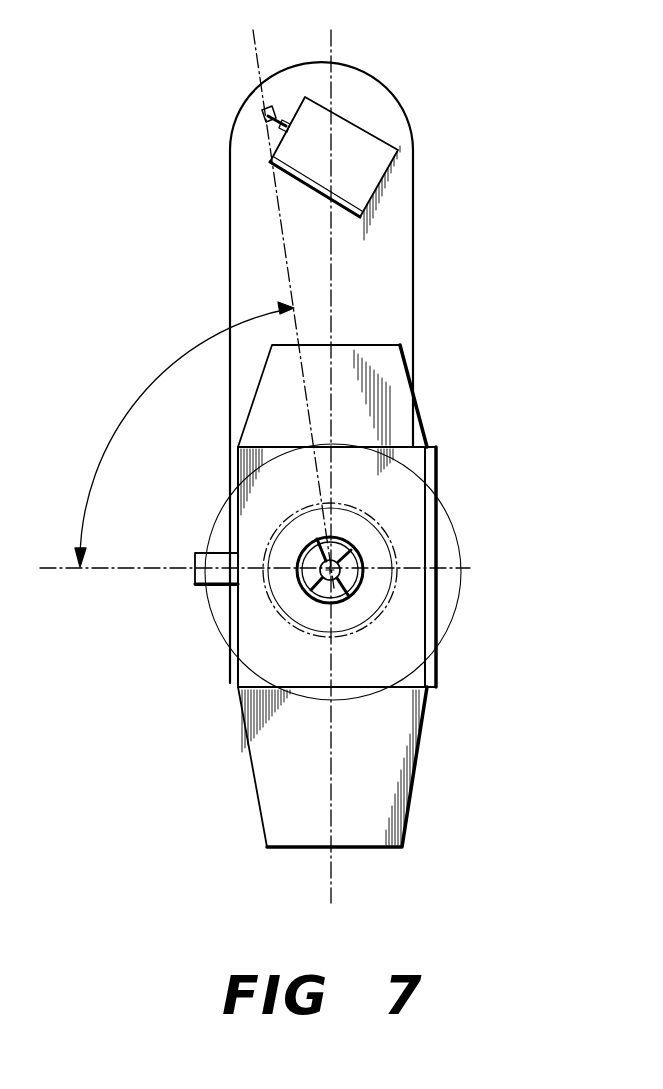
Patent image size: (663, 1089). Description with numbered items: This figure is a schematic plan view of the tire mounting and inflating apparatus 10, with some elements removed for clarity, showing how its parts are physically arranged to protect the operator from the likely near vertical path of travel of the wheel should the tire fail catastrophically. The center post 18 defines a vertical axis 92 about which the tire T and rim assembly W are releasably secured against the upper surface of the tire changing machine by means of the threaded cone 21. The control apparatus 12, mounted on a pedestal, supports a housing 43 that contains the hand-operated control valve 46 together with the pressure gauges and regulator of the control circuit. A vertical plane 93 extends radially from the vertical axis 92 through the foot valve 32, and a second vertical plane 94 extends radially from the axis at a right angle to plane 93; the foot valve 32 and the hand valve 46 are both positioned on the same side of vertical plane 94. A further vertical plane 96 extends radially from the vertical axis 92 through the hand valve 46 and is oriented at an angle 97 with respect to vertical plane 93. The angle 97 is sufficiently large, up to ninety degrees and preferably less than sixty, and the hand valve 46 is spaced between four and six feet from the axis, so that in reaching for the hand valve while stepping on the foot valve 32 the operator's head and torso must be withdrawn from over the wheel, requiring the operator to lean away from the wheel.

The tire mounting and inflating apparatus 10 is at (473, 325).
The control apparatus 12 is at (366, 107).
The center post 18 is at (340, 540).
The threaded cone 21 is at (353, 546).
The foot valve 32 is at (197, 587).
The housing 43 is at (368, 140).
The hand-operated control valve 46 is at (266, 120).
The vertical axis 92 is at (345, 603).
The vertical plane 93 is at (110, 572).
The vertical plane 94 is at (332, 312).
The vertical plane 96 is at (280, 233).
The angle 97 is at (131, 406).
The rim assembly W is at (301, 643).
The tire T is at (462, 600).